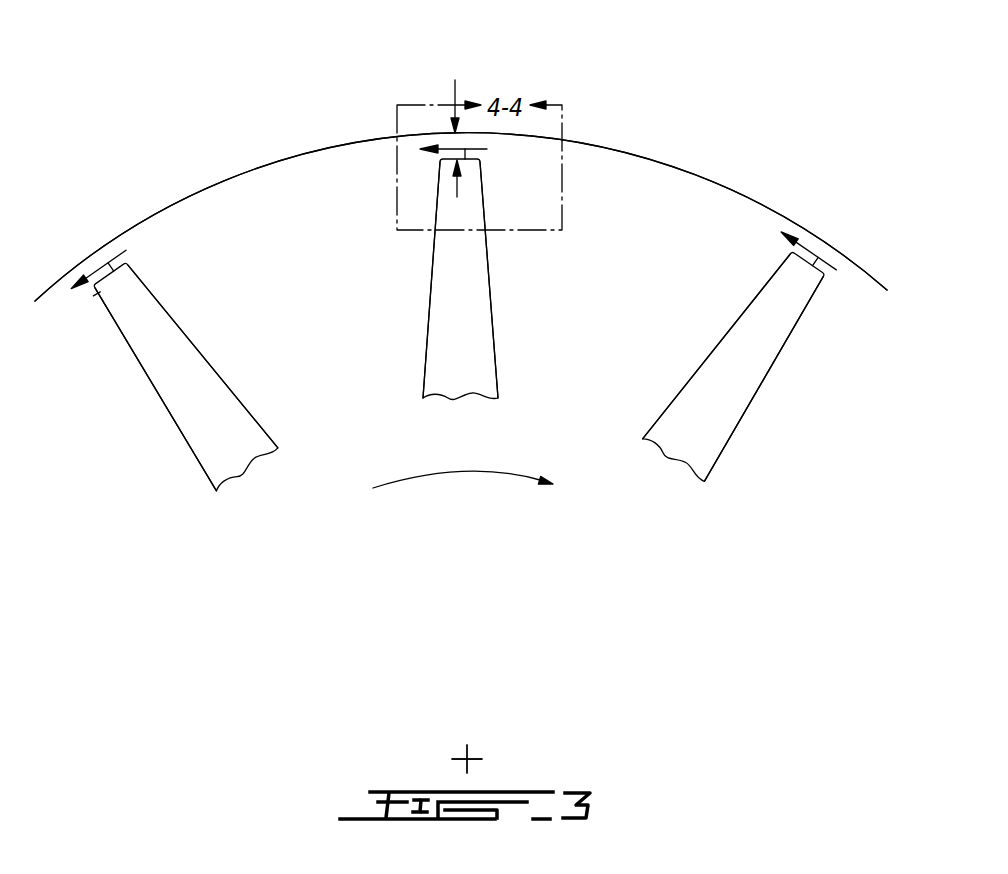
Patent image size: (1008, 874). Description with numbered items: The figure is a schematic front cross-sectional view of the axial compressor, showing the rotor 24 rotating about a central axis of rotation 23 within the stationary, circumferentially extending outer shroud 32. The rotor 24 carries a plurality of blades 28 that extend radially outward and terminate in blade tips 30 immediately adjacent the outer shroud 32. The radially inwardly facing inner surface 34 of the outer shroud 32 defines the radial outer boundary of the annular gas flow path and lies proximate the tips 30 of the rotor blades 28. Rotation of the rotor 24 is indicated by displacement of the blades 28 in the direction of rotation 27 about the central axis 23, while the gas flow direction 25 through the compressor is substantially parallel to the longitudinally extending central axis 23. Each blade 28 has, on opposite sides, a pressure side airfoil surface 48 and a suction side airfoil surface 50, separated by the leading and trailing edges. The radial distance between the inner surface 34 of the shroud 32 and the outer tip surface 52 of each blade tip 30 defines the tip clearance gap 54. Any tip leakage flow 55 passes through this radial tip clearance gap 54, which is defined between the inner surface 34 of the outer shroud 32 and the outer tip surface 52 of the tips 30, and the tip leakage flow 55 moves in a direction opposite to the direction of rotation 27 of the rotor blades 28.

The central axis of rotation 23 is at (470, 752).
The rotor 24 is at (201, 530).
The gas flow direction 25 is at (470, 752).
The direction of rotation 27 is at (463, 473).
The blade 28 is at (182, 424).
The blade tip 30 is at (97, 293).
The outer shroud 32 is at (774, 186).
The inner surface 34 is at (654, 165).
The pressure side airfoil surface 48 is at (190, 345).
The suction side airfoil surface 50 is at (137, 363).
The outer tip surface 52 is at (110, 260).
The tip clearance gap 54 is at (454, 93).
The tip leakage flow 55 is at (98, 271).